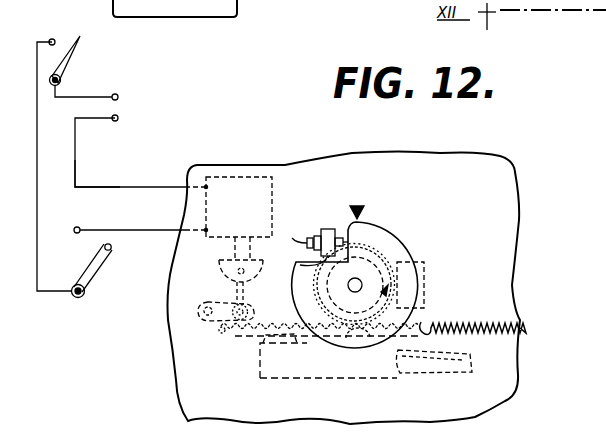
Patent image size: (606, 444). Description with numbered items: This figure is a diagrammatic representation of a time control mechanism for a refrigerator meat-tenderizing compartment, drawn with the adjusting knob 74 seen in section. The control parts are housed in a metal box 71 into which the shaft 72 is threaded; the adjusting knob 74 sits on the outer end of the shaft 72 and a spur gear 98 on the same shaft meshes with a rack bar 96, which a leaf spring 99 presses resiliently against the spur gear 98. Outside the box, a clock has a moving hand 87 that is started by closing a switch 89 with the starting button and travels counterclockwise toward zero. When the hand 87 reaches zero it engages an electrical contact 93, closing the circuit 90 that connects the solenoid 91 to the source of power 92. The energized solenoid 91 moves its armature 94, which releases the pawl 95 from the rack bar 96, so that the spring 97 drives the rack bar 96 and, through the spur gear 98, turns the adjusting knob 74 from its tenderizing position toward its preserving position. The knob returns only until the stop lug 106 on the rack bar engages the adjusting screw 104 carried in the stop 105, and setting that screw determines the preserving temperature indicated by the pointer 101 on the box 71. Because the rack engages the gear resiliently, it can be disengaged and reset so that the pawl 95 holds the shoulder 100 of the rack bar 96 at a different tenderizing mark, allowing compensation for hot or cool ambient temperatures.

The metal box 71 is at (517, 178).
The shaft 72 is at (358, 275).
The adjusting knob 74 is at (393, 243).
The moving hand 87 is at (70, 62).
The switch 89 is at (100, 266).
The circuit 90 is at (128, 185).
The solenoid 91 is at (255, 176).
The source of power 92 is at (118, 118).
The electrical contact 93 is at (54, 38).
The armature 94 is at (219, 262).
The pawl 95 is at (250, 310).
The rack bar 96 is at (250, 340).
The spring 97 is at (462, 318).
The spur gear 98 is at (424, 305).
The leaf spring 99 is at (398, 370).
The shoulder 100 is at (219, 333).
The pointer 101 is at (357, 206).
The adjusting screw 104 is at (313, 242).
The stop 105 is at (333, 229).
The stop lug 106 is at (420, 262).